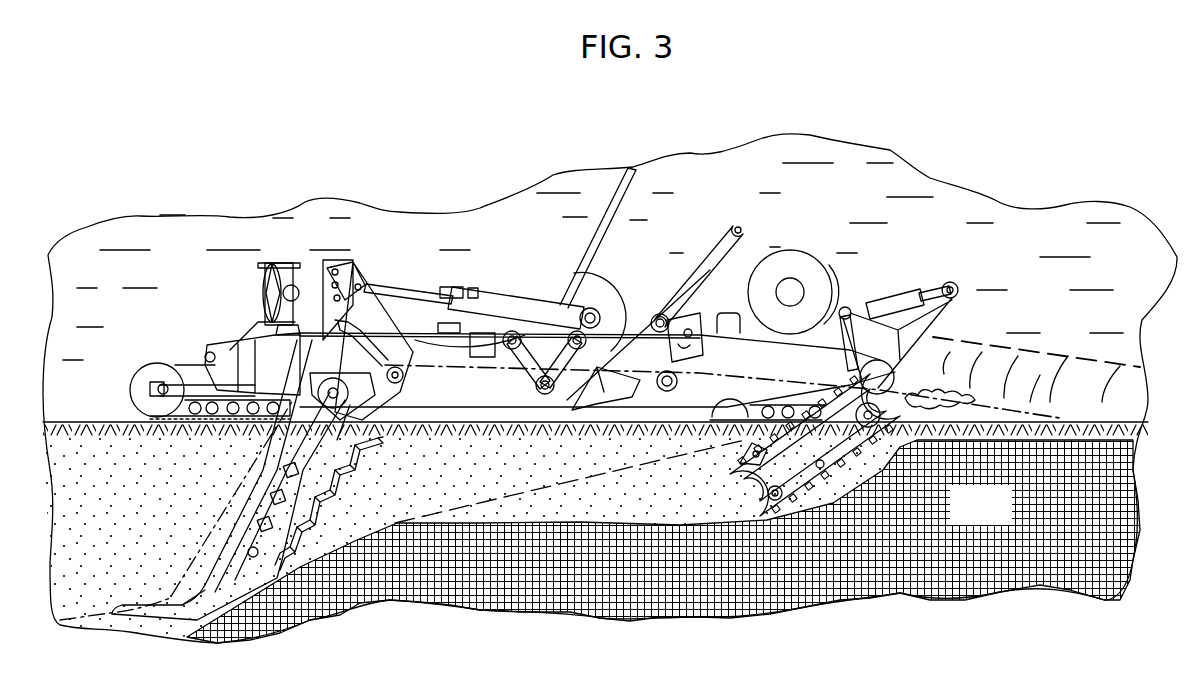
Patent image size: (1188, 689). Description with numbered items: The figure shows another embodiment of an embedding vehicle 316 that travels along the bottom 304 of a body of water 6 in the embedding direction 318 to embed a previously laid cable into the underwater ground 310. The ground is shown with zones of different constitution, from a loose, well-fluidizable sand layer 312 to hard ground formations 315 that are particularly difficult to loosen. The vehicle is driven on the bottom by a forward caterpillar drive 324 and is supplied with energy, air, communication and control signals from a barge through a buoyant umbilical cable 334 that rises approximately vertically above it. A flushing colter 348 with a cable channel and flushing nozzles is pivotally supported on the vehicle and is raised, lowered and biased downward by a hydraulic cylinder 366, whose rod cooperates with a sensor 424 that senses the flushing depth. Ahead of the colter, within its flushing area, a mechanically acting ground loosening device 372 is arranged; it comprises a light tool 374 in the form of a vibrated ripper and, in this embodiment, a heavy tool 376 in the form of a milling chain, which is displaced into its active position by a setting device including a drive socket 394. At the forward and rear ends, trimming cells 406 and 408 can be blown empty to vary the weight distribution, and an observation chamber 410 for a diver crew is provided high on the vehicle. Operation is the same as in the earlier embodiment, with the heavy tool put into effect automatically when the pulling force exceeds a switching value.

The body of water 6 is at (393, 250).
The bottom of the body of water 304 is at (82, 422).
The underwater ground 310 is at (115, 460).
The sand layer 312 is at (152, 533).
The hard ground formations 315 is at (1002, 517).
The embedding vehicle 316 is at (222, 338).
The embedding direction 318 is at (530, 237).
The caterpillar drive 324 is at (160, 362).
The umbilical cable 334 is at (614, 187).
The flushing colter 348 is at (262, 473).
The hydraulic cylinder 366 is at (513, 303).
The ground loosening device 372 is at (631, 297).
The light tool 374 is at (590, 283).
The heavy tool 376 is at (902, 288).
The drive socket 394 is at (922, 288).
The trimming cell 406 is at (726, 328).
The trimming cell 408 is at (243, 326).
The observation chamber 410 is at (797, 257).
The sensor 424 is at (471, 288).